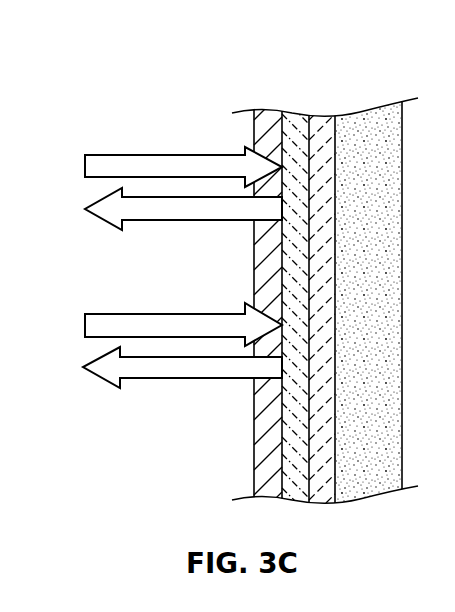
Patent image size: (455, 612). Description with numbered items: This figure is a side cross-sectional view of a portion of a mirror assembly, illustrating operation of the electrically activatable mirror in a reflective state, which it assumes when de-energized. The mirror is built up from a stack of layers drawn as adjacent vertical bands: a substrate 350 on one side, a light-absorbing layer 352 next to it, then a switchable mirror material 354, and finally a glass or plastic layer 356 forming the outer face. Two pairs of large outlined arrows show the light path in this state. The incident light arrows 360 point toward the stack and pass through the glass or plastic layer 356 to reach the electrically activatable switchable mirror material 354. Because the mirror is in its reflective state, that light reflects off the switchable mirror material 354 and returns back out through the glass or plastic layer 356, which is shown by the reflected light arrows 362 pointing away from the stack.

The substrate 350 is at (365, 115).
The light-absorbing layer 352 is at (326, 117).
The switchable mirror material 354 is at (288, 115).
The glass or plastic layer 356 is at (269, 117).
The incident light arrows 360 is at (85, 156).
The reflected light arrows 362 is at (100, 224).